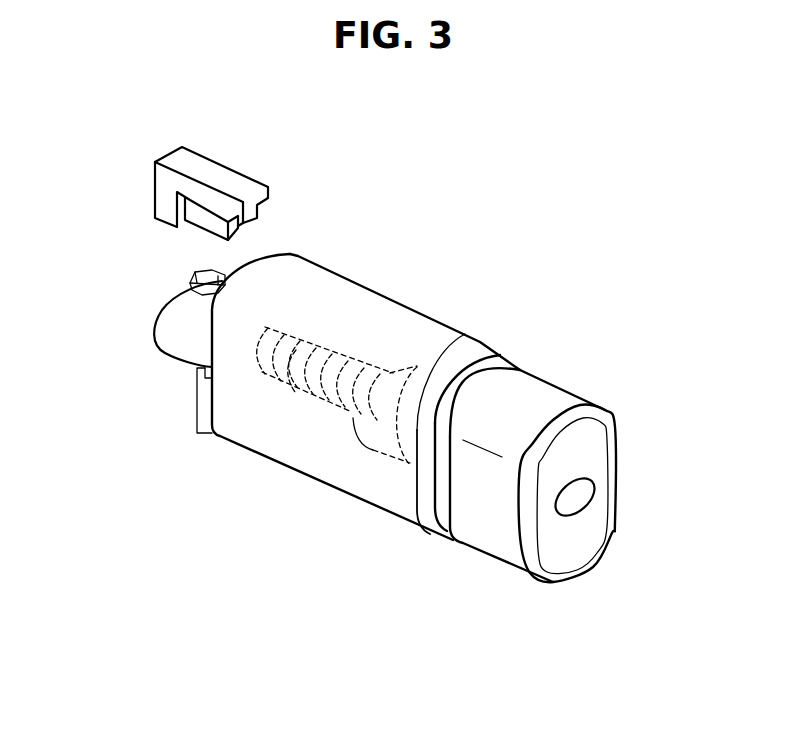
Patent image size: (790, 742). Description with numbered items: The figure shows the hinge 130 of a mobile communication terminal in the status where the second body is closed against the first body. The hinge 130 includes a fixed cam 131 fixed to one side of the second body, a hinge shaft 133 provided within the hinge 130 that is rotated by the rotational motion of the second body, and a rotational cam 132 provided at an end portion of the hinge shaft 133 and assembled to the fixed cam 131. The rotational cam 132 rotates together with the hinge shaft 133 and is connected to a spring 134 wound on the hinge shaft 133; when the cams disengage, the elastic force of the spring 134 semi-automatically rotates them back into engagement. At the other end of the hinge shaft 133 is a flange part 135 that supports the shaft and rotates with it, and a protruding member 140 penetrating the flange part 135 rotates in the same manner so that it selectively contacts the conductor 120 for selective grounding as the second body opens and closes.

The conductor 120 is at (216, 173).
The hinge 130 is at (315, 242).
The fixed cam 131 is at (598, 463).
The rotational cam 132 is at (412, 380).
The hinge shaft 133 is at (275, 335).
The spring 134 is at (312, 393).
The flange part 135 is at (173, 312).
The protruding member 140 is at (205, 405).